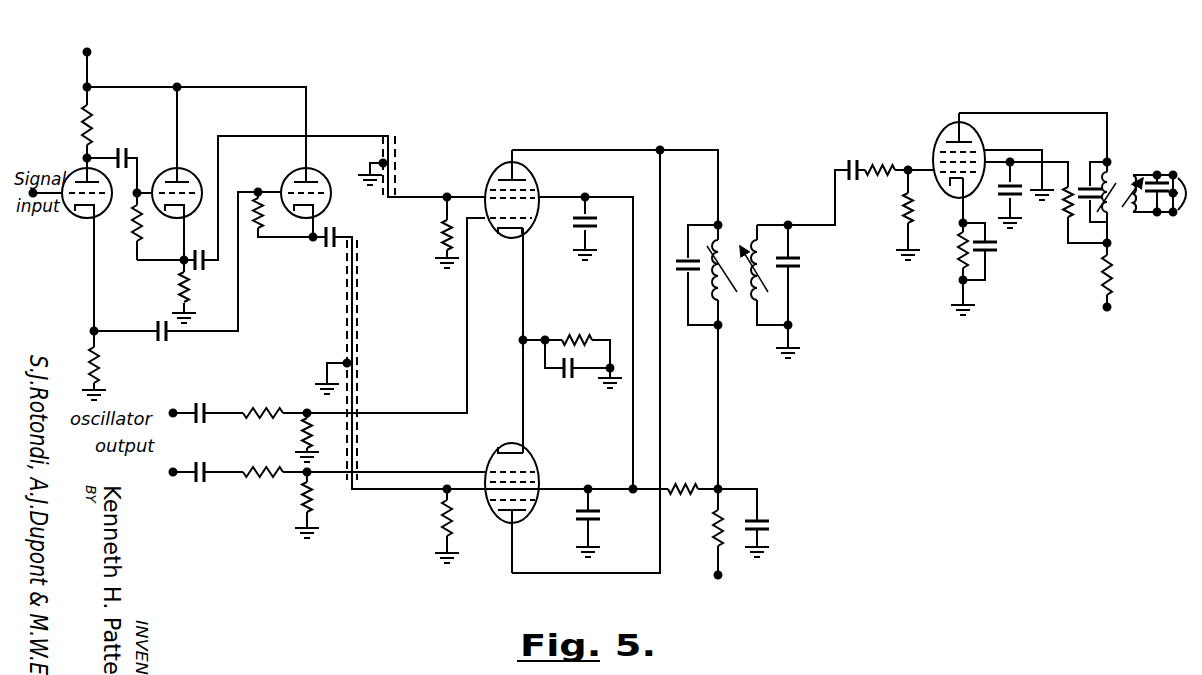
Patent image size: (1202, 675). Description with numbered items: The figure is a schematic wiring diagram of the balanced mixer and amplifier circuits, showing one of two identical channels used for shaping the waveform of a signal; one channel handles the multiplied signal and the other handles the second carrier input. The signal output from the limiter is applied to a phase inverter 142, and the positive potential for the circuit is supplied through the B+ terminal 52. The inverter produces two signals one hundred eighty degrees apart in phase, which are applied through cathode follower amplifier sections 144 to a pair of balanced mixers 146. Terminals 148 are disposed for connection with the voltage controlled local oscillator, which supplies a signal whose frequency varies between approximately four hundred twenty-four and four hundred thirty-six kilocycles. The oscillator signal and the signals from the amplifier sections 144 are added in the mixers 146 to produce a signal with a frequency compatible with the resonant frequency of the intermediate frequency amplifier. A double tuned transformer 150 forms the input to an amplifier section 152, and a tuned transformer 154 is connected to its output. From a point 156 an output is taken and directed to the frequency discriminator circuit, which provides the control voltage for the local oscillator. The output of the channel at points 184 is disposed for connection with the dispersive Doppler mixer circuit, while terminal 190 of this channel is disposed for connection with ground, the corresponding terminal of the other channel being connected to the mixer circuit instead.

The B+ terminal 52 is at (90, 50).
The phase inverter 142 is at (128, 139).
The cathode follower amplifier sections 144 is at (250, 131).
The balanced mixers 146 is at (511, 266).
The terminals 148 is at (173, 413).
The double tuned transformer 150 is at (758, 219).
The amplifier section 152 is at (972, 103).
The tuned transformer 154 is at (1143, 146).
The point 156 is at (788, 223).
The output points 184 is at (1173, 213).
The terminal 190 is at (1173, 175).